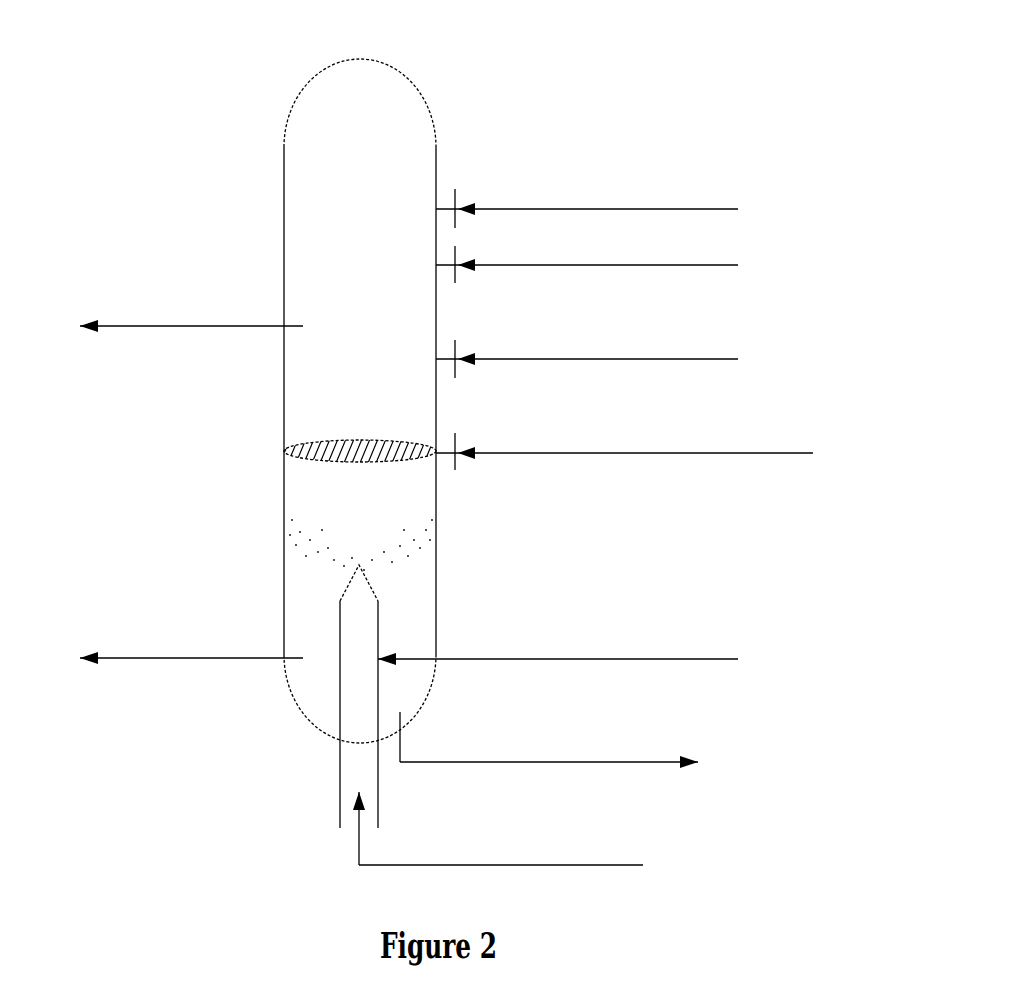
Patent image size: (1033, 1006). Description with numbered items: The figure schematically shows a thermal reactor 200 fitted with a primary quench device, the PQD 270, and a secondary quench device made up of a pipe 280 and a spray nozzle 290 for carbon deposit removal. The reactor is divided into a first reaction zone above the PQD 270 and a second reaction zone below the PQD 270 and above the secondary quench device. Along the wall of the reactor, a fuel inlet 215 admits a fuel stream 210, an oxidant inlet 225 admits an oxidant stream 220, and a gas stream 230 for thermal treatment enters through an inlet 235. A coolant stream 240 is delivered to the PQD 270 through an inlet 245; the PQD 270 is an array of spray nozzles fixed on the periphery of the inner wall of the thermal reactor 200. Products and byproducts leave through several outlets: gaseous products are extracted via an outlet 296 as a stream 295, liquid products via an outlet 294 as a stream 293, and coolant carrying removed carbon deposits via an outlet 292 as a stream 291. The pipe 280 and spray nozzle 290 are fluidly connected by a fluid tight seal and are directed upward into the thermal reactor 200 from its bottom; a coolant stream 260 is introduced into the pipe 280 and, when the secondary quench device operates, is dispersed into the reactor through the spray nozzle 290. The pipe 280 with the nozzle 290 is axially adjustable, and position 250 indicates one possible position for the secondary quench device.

The thermal reactor 200 is at (372, 56).
The fuel stream 210 is at (587, 194).
The fuel inlet 215 is at (437, 206).
The oxidant stream 220 is at (587, 250).
The oxidant inlet 225 is at (437, 263).
The gas stream 230 is at (587, 345).
The inlet 235 is at (437, 356).
The coolant stream 240 is at (624, 439).
The inlet 245 is at (437, 452).
The position 250 is at (558, 643).
The coolant stream 260 is at (498, 828).
The PQD 270 is at (284, 451).
The pipe 280 is at (353, 692).
The spray nozzle 290 is at (359, 565).
The stream 291 is at (549, 747).
The outlet 292 is at (402, 722).
The stream 293 is at (191, 644).
The outlet 294 is at (284, 658).
The stream 295 is at (191, 313).
The outlet 296 is at (284, 326).